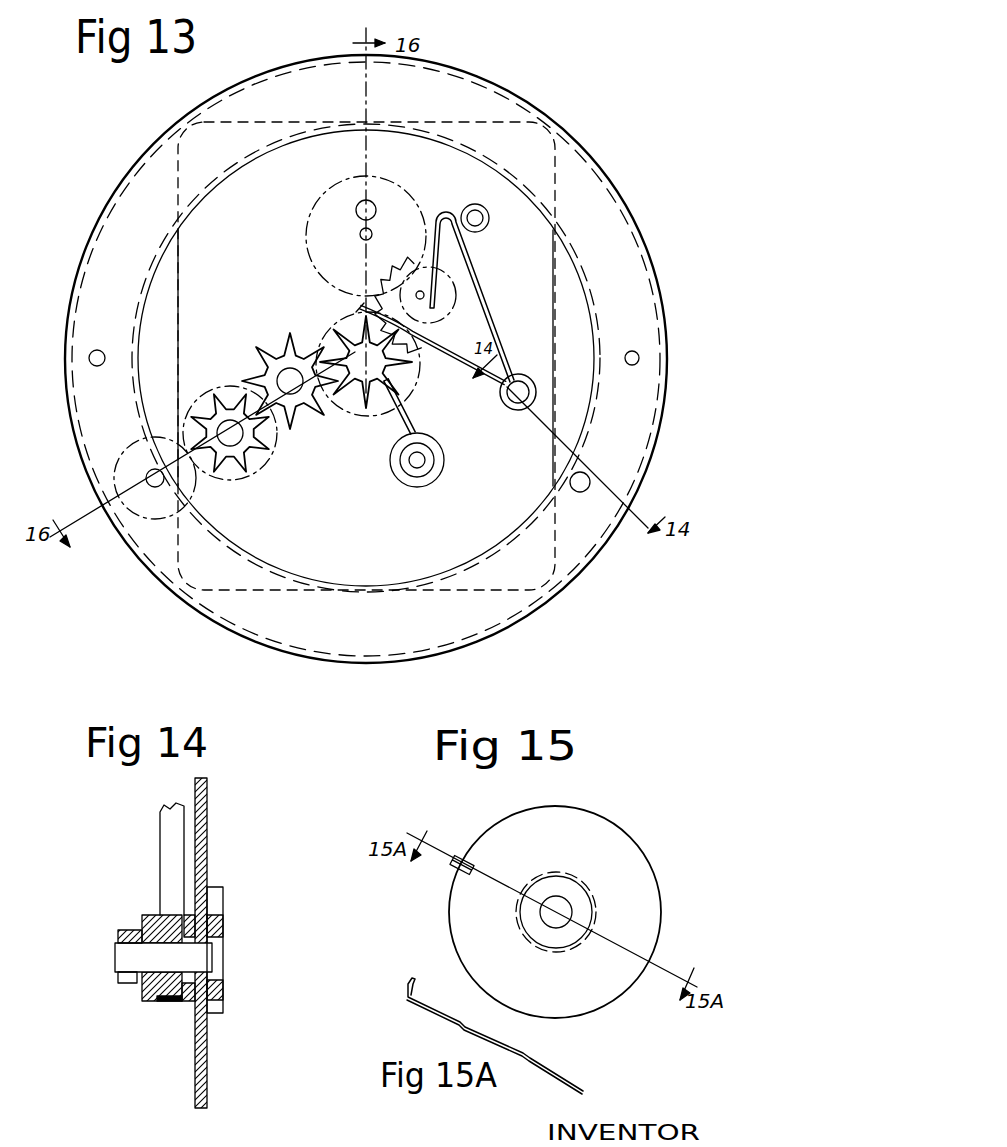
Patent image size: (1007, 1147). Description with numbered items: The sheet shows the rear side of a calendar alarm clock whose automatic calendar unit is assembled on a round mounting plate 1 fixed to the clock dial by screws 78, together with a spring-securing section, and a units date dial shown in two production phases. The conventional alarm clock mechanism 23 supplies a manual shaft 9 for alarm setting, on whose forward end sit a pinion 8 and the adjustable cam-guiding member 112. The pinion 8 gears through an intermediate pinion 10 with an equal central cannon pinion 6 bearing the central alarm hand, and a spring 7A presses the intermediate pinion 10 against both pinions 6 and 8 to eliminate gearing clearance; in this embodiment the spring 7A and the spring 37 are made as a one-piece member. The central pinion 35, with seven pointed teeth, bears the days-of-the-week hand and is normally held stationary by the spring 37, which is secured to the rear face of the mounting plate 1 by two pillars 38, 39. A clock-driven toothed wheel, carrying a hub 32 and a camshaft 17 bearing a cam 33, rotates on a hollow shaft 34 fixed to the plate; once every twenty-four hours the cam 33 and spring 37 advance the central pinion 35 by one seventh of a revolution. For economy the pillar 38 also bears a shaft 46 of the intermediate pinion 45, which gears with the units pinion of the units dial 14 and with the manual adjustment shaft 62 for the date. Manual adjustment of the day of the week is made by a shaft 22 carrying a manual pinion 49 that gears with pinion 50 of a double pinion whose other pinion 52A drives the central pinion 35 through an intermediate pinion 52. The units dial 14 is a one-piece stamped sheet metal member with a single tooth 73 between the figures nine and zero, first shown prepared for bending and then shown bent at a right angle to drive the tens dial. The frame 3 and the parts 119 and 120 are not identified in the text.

In FIG. 14, the mounting plate 1 is at (207, 1060).
In FIG. 13, the dial frame 3 is at (594, 180).
In FIG. 13, the central cannon pinion 6 is at (337, 311).
In FIG. 13, the spring 7A is at (430, 302).
In FIG. 13, the pinion 8 is at (308, 224).
In FIG. 13, the manual shaft 9 is at (359, 235).
In FIG. 13, the intermediate pinion 10 is at (472, 297).
In FIG. 15, the units dial 14 is at (604, 827).
In FIG. 13, the camshaft 17 is at (420, 461).
In FIG. 13, the manual adjustment shaft 22 is at (150, 485).
In FIG. 13, the alarm clock mechanism 23 is at (178, 278).
In FIG. 13, the hub 32 is at (415, 482).
In FIG. 13, the cam 33 is at (397, 423).
In FIG. 13, the hollow shaft 34 is at (428, 466).
In FIG. 13, the central pinion 35 is at (337, 330).
In FIG. 13, the spring 37 is at (463, 366).
In FIG. 14, the spring 37 is at (160, 833).
In FIG. 13, the pillar 38 is at (514, 405).
In FIG. 14, the pillar 38 is at (142, 923).
In FIG. 13, the pillar 39 is at (490, 218).
In FIG. 14, the intermediate pinion 45 is at (223, 897).
In FIG. 14, the shaft 46 is at (218, 967).
In FIG. 13, the manual pinion 49 is at (152, 522).
In FIG. 13, the pinion 50 is at (232, 478).
In FIG. 13, the intermediate pinion 52 is at (293, 428).
In FIG. 13, the pinion 52A is at (228, 480).
In FIG. 13, the manual adjustment shaft 62 is at (586, 490).
In FIG. 15, the single tooth 73 is at (458, 855).
In FIG. 15A, the single tooth 73 is at (411, 978).
In FIG. 13, the screws 78 is at (100, 350).
In FIG. 13, the cam-guiding member 112 is at (360, 205).
In FIG. 14, the washer 119 is at (186, 1006).
In FIG. 14, the nut 120 is at (123, 988).